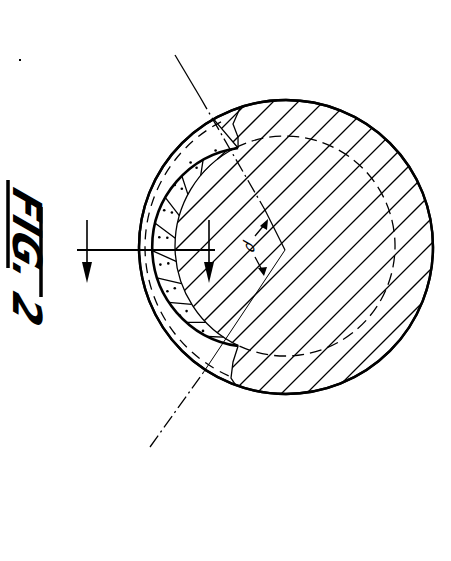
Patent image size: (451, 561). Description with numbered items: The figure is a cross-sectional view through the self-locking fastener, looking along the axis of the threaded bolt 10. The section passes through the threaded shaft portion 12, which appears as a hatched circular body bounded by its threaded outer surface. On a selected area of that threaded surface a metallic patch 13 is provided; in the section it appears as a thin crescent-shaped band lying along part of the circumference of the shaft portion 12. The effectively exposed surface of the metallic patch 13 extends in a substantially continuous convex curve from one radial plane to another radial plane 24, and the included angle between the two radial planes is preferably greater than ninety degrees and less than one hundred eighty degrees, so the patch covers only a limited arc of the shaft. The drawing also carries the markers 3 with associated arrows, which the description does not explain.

The threaded bolt 10 is at (285, 426).
The threaded shaft portion 12 is at (313, 391).
The metallic patch 13 is at (160, 233).
The radial plane 24 is at (192, 85).
The section line for FIG. 3 is at (151, 273).